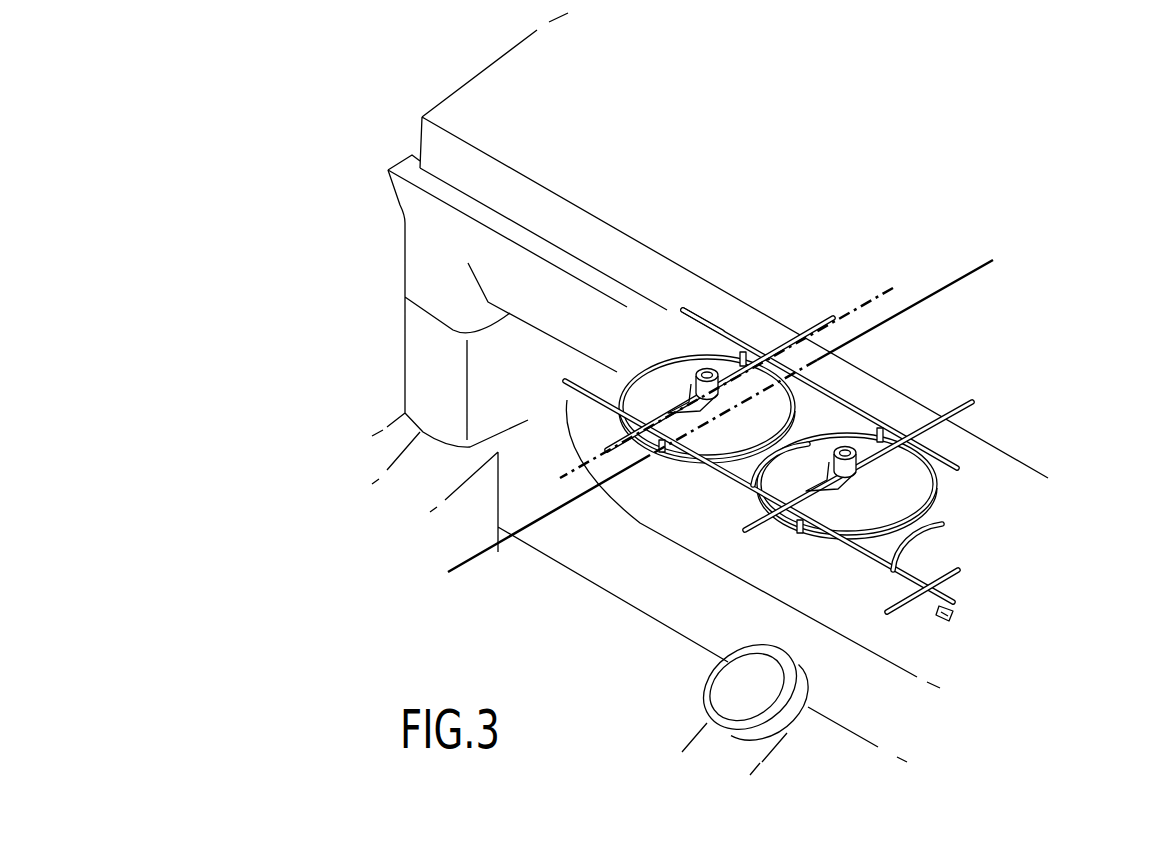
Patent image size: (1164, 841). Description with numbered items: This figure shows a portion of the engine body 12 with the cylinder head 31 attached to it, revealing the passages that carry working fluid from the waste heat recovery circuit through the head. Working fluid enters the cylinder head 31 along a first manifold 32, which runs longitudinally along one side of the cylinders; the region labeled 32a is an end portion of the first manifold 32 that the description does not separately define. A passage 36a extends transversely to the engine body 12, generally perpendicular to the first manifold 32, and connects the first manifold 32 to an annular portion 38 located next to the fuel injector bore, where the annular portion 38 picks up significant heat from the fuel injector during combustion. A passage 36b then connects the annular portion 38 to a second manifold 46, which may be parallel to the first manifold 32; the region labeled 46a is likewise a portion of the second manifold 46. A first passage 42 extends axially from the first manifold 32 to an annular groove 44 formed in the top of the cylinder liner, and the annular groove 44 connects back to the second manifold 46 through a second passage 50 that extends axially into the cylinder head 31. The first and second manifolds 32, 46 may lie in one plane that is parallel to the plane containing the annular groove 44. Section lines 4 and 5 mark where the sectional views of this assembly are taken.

The engine body 12 is at (300, 124).
The cylinder head 31 is at (417, 262).
The first manifold 32 is at (897, 543).
The first rod end 32a is at (563, 381).
The passage 36a is at (676, 413).
The passage 36b is at (766, 380).
The annular portion 38 is at (690, 366).
The first passage 42 is at (662, 448).
The annular groove 44 is at (735, 459).
The second manifold 46 is at (785, 331).
The second rod end 46a is at (683, 311).
The second passage 50 is at (742, 351).
The section line 4- 4 is at (570, 482).
The section line 5- 5 is at (462, 575).